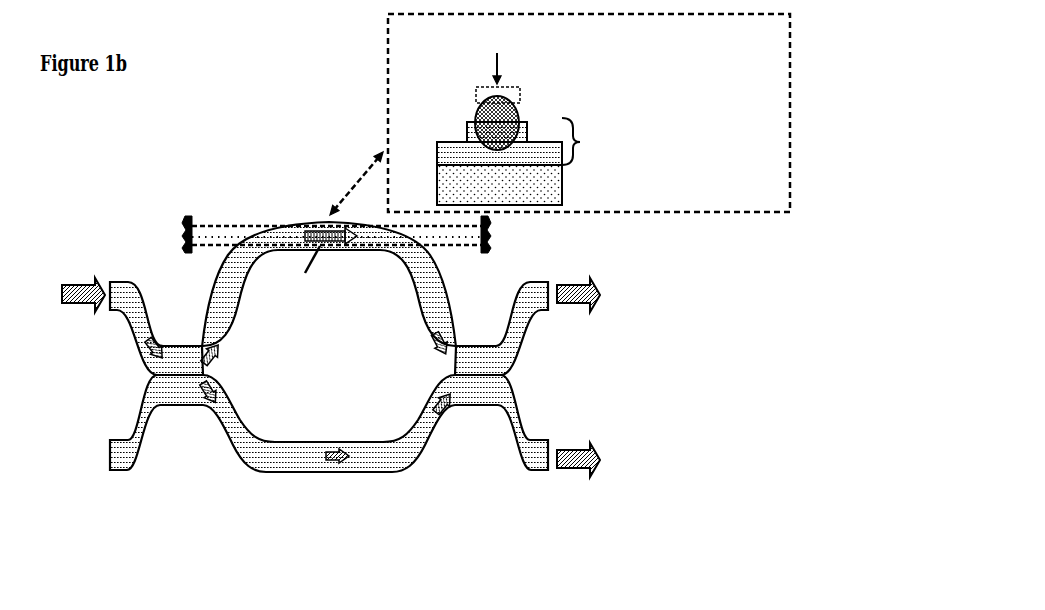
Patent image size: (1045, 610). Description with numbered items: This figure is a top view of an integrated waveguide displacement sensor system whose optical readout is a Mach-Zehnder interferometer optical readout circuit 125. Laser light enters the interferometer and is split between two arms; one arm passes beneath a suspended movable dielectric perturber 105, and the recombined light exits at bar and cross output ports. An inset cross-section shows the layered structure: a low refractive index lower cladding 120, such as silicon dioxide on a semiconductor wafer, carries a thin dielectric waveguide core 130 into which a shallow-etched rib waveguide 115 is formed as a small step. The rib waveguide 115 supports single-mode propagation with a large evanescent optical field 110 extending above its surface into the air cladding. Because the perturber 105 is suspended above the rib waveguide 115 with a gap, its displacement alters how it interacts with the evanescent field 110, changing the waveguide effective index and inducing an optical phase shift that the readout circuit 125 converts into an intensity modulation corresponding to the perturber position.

The movable dielectric perturber 105 is at (233, 233).
The evanescent optical field 110 is at (527, 115).
The shallow-etched rib waveguide 115 is at (467, 128).
The lower cladding 120 is at (568, 183).
The integrated optical readout circuit 125 is at (422, 463).
The waveguide core 130 is at (597, 141).